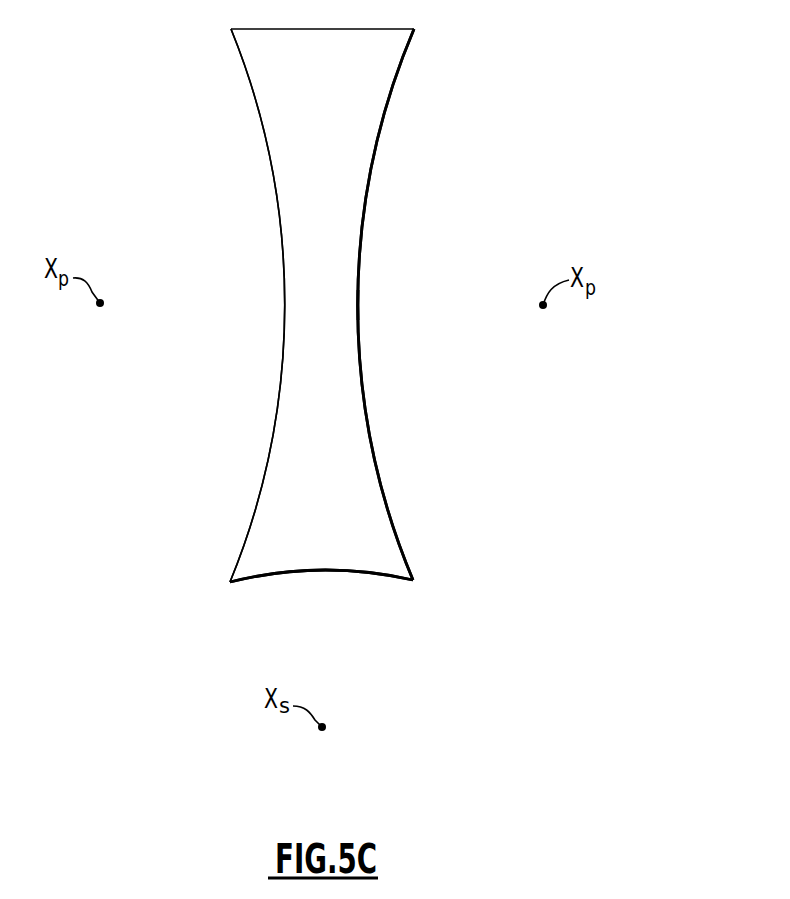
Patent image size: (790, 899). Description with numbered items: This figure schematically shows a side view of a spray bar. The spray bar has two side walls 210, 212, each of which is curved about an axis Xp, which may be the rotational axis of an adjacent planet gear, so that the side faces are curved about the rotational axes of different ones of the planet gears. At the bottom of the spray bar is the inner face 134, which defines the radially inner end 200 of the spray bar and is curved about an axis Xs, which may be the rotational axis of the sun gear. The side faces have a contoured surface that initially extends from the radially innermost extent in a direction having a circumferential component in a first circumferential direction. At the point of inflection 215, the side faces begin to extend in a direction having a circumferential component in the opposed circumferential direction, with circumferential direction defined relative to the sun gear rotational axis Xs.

The radially inner end 200 is at (413, 581).
The side wall 210 is at (383, 114).
The side wall 212 is at (260, 118).
The point of inflection 215 is at (358, 305).
The inner face 134 is at (321, 572).